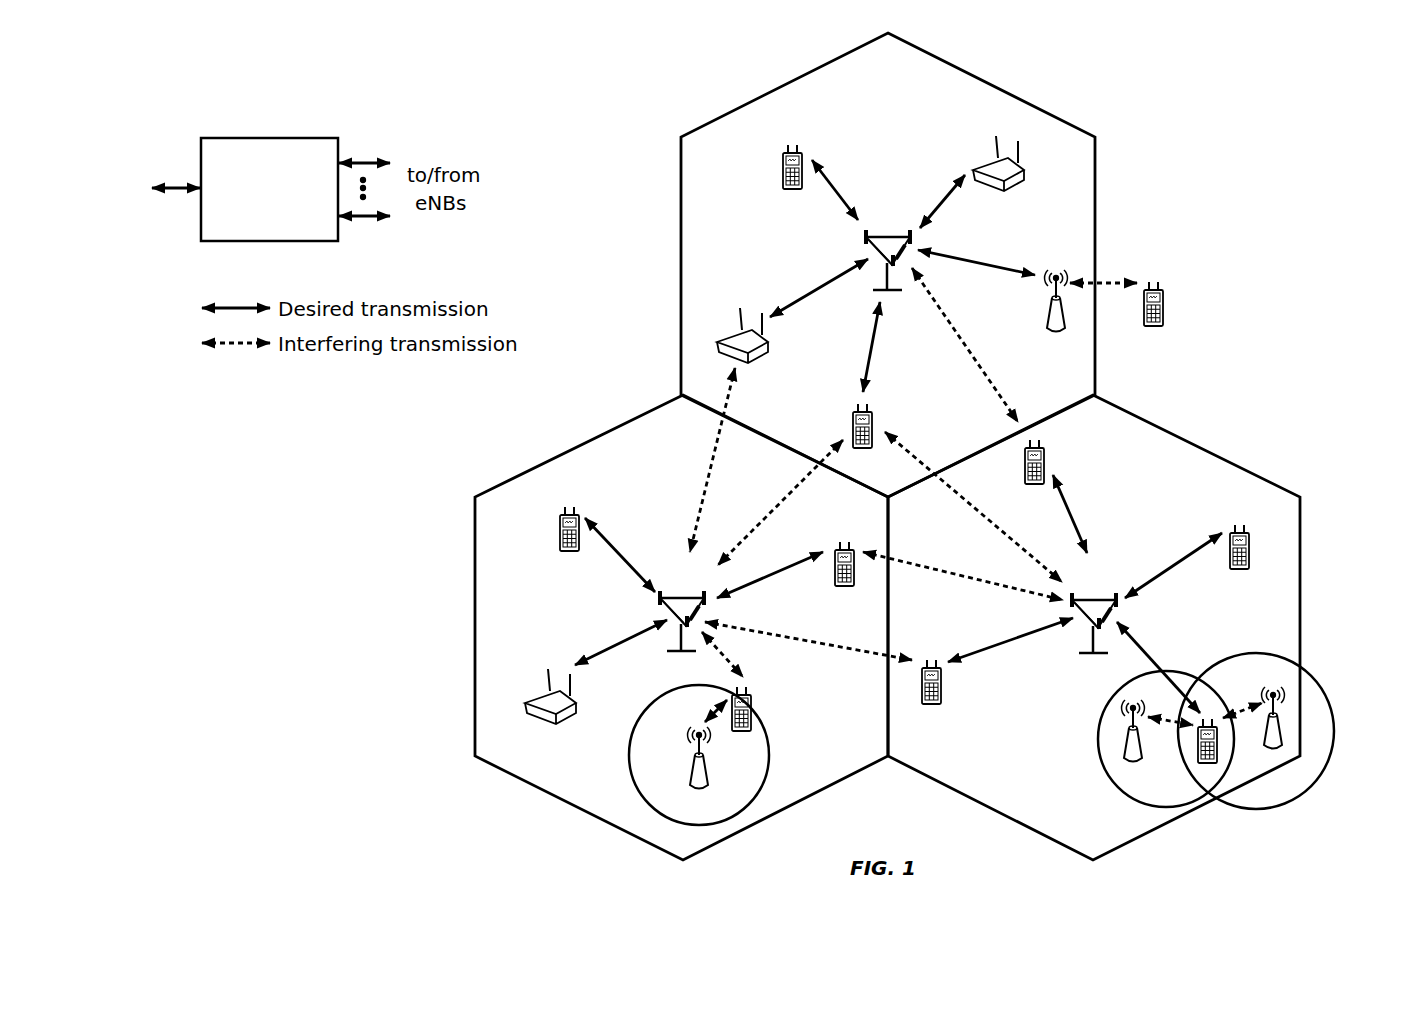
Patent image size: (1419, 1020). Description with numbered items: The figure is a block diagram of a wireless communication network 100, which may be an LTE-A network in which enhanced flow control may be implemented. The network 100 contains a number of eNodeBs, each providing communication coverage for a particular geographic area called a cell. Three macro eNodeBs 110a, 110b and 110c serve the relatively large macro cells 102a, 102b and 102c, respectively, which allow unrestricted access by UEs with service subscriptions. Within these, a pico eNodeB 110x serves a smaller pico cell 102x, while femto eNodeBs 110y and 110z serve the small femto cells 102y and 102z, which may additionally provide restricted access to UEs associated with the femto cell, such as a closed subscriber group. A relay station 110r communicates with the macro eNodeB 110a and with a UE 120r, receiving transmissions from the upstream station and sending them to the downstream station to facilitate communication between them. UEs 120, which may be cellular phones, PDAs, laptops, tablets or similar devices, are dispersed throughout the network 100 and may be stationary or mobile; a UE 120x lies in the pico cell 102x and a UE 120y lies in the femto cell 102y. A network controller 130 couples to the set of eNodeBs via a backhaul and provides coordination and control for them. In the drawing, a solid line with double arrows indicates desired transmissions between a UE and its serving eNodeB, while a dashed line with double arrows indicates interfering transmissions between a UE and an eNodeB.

The wireless communication network 100 is at (1240, 98).
The network controller 130 is at (266, 137).
The macro cell 102a is at (1002, 73).
The macro cell 102b is at (578, 445).
The macro cell 102c is at (1200, 446).
The pico cell 102x is at (653, 705).
The femto cell 102y is at (1104, 710).
The femto cell 102z is at (1252, 654).
The macro eNodeB 110a is at (883, 235).
The macro eNodeB 110b is at (680, 594).
The macro eNodeB 110c is at (1092, 596).
The pico eNodeB 110x is at (709, 780).
The femto eNodeB 110y is at (1143, 755).
The femto eNodeB 110z is at (1283, 745).
The relay station 110r is at (1047, 318).
The user equipment (UE) 120 is at (783, 162).
The UE 120r is at (1164, 318).
The UE 120x is at (753, 706).
The UE 120y is at (1195, 762).